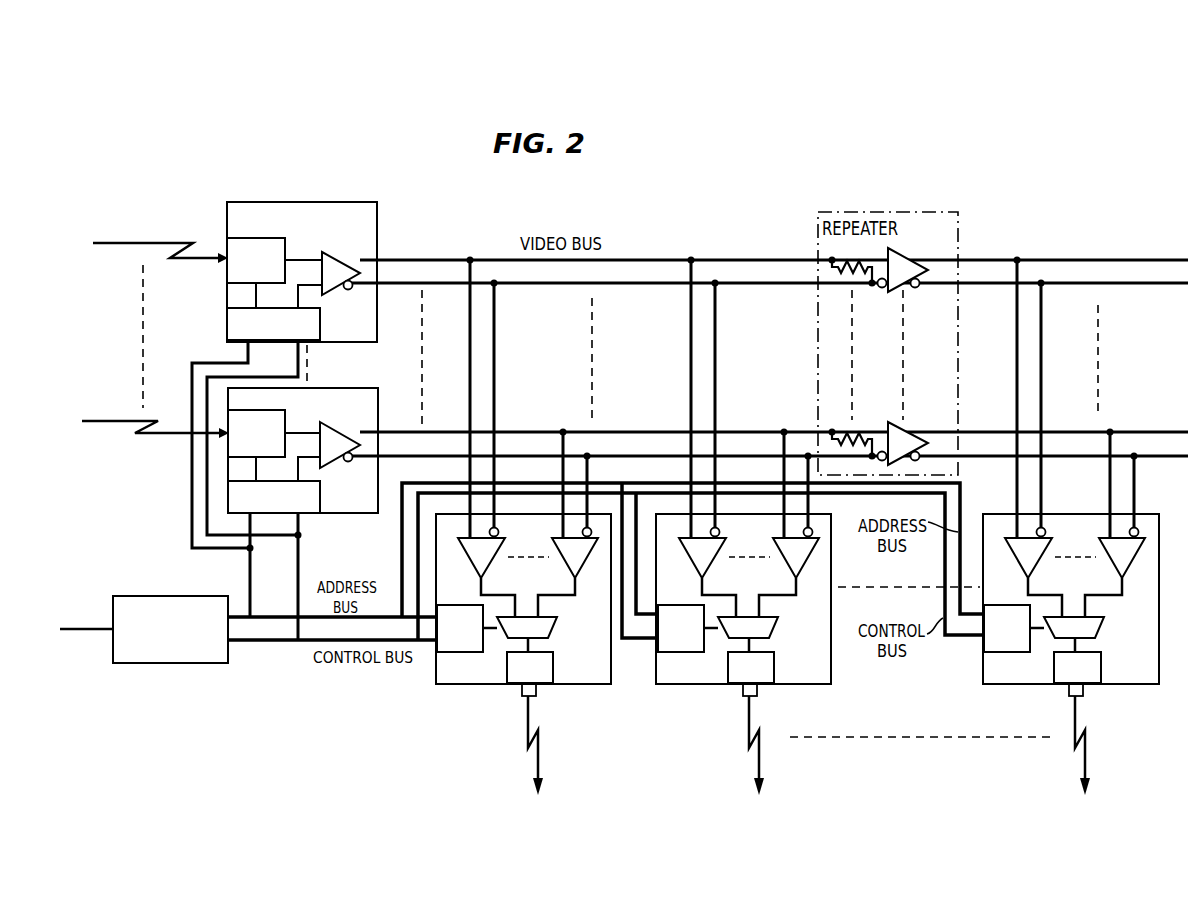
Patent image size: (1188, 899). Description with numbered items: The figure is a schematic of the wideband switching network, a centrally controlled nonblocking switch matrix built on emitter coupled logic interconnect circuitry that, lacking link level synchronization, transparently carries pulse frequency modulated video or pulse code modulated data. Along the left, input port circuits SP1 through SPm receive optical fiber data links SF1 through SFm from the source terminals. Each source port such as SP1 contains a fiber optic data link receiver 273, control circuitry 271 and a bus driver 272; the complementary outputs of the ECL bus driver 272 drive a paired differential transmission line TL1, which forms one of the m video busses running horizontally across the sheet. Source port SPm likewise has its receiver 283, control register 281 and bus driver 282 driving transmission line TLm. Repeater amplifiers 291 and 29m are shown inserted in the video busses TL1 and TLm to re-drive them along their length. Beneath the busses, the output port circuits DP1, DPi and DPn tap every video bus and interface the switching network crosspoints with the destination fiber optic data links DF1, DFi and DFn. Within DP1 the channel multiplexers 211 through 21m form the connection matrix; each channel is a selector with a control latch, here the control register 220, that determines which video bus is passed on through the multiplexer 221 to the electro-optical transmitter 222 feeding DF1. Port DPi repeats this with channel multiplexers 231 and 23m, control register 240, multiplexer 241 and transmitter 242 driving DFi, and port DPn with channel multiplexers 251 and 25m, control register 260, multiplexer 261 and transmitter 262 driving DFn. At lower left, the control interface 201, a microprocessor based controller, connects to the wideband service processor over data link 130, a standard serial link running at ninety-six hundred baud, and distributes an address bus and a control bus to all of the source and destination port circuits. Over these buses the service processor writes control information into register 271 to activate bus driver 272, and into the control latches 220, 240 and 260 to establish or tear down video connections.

The data link 130 is at (97, 641).
The control interface 201 is at (170, 596).
The channel multiplexer 211 is at (503, 551).
The channel multiplexer 21m is at (564, 563).
The control register 220 is at (460, 605).
The multiplexer 221 is at (558, 628).
The electro-optical transducer 222 is at (553, 663).
The channel multiplexer 231 is at (724, 551).
The channel multiplexer 23m is at (785, 563).
The control register 240 is at (681, 605).
The multiplexer 241 is at (779, 628).
The electro-optical transducer 242 is at (774, 663).
The channel multiplexer 251 is at (1049, 549).
The channel multiplexer 25m is at (1111, 563).
The control register 260 is at (1007, 603).
The multiplexer 261 is at (1105, 628).
The electro-optical transducer 262 is at (1103, 668).
The control circuitry 271 is at (322, 316).
The bus driver 272 is at (325, 250).
The fiber optic data link receiver 273 is at (253, 238).
The control circuitry 281 is at (322, 488).
The bus driver 282 is at (325, 427).
The fiber optic data link receiver 283 is at (287, 416).
The repeater amplifier 291 is at (890, 294).
The repeater amplifier 29m is at (888, 422).
The source port circuit SP1 is at (290, 202).
The source port circuit SPm is at (332, 388).
The source fiber SF1 is at (160, 242).
The source fiber SFm is at (155, 418).
The transmission line TL1 is at (420, 282).
The transmission line TLm is at (524, 453).
The output port circuit DP1 is at (467, 684).
The output port circuit DPi is at (688, 684).
The output port circuit DPn is at (1014, 684).
The destination fiber DF1 is at (541, 751).
The destination fiber DFi is at (762, 751).
The destination fiber DFn is at (1088, 751).